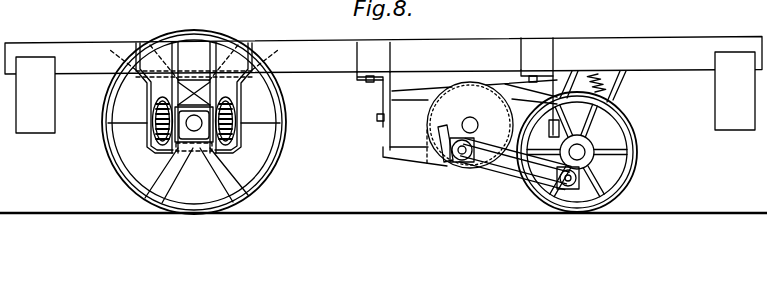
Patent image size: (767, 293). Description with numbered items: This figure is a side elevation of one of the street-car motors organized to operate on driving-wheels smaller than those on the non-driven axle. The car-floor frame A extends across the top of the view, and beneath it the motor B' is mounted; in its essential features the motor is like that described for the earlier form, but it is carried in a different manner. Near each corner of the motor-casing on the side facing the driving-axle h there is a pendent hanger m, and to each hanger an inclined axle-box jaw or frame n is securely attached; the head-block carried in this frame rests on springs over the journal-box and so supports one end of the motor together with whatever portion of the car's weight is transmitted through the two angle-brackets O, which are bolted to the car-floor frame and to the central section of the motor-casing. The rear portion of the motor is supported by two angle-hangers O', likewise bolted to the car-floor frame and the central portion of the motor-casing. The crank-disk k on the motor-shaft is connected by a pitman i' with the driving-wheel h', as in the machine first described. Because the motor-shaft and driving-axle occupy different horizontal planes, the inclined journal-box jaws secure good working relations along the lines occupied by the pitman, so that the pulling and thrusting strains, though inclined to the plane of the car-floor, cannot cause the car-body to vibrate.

The car body frame A is at (383, 125).
The angle-hanger O' is at (363, 76).
The motor B' is at (467, 119).
The crank-disk k is at (470, 125).
The driving belt i' is at (508, 163).
The angle-bracket O is at (540, 87).
The pendent hanger m is at (572, 132).
The inclined axle-box jaw or frame n is at (598, 143).
The driving-axle h is at (577, 152).
The driving-wheel h' is at (586, 152).